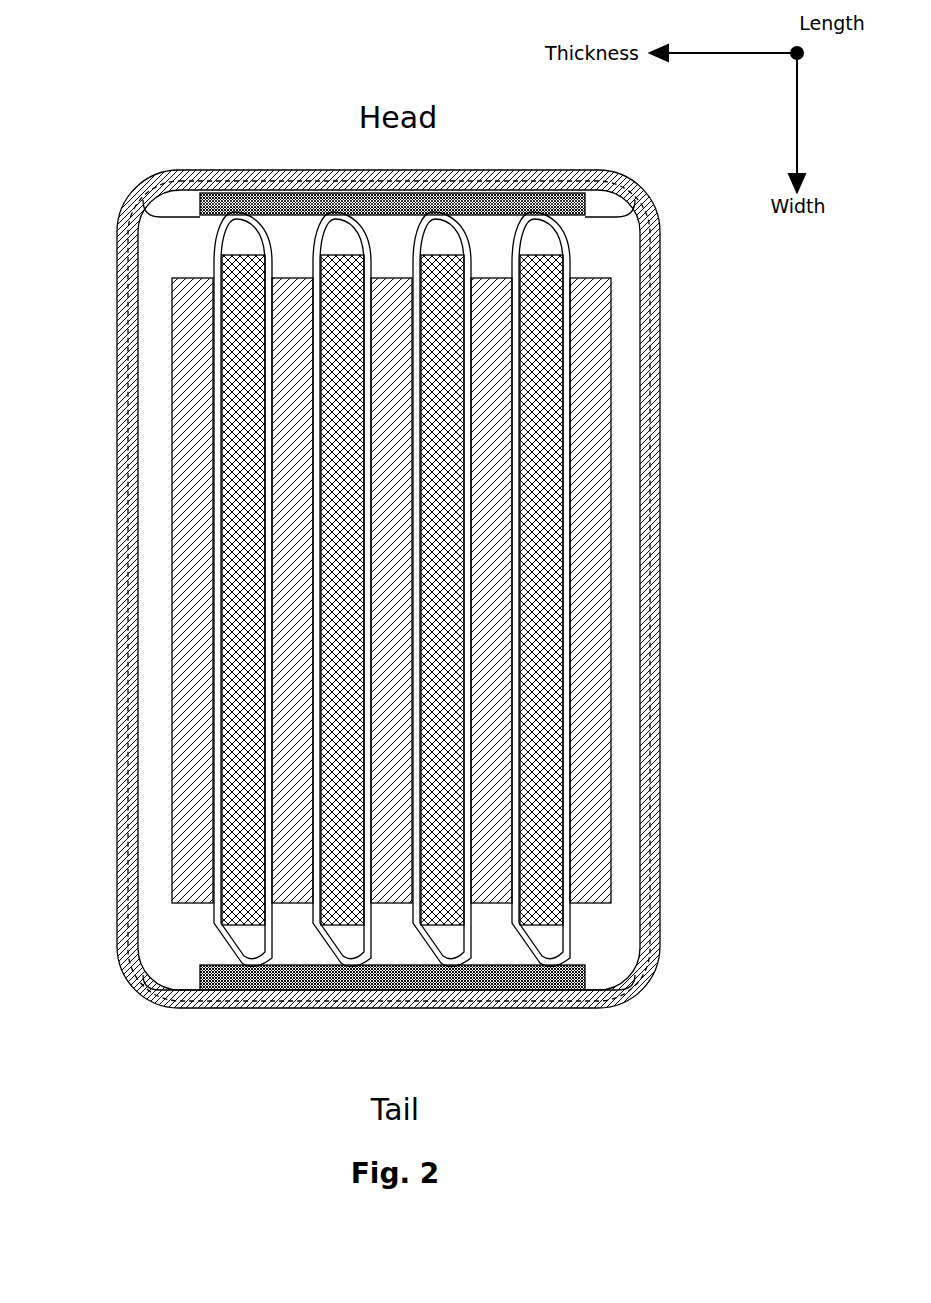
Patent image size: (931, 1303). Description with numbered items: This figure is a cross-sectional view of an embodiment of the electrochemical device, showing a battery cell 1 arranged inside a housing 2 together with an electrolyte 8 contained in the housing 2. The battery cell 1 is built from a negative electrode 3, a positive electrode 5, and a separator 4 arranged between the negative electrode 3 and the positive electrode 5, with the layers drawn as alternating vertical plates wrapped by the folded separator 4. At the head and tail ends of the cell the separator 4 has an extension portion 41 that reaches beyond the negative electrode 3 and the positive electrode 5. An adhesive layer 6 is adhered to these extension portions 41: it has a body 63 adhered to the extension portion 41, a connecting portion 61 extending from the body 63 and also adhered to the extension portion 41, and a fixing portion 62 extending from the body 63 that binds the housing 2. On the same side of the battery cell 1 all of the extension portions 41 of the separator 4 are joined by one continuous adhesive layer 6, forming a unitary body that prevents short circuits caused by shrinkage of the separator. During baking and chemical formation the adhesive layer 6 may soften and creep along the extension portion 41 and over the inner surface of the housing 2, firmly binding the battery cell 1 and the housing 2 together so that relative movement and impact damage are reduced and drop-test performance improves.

The battery cell 1 is at (592, 255).
The housing 2 is at (657, 467).
The negative electrode 3 is at (600, 885).
The separator 4 is at (567, 913).
The extension portion 41 is at (537, 990).
The positive electrode 5 is at (587, 990).
The adhesive layer 6 is at (205, 213).
The connecting portion 61 is at (200, 217).
The fixing portion 62 is at (228, 195).
The body 63 is at (323, 993).
The electrolyte 8 is at (168, 947).